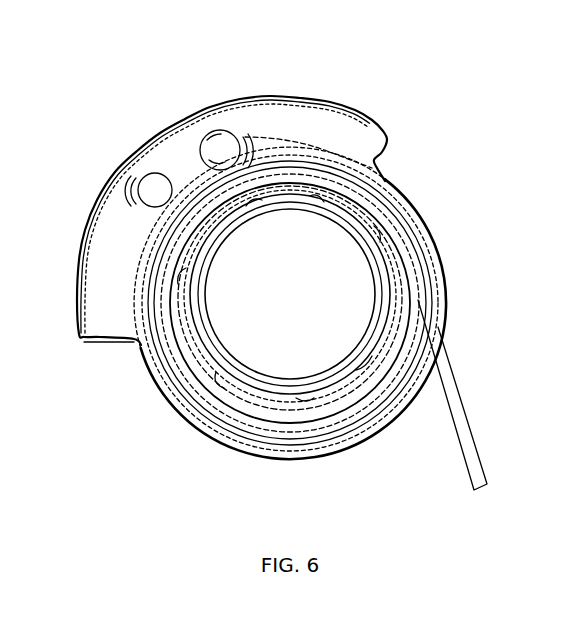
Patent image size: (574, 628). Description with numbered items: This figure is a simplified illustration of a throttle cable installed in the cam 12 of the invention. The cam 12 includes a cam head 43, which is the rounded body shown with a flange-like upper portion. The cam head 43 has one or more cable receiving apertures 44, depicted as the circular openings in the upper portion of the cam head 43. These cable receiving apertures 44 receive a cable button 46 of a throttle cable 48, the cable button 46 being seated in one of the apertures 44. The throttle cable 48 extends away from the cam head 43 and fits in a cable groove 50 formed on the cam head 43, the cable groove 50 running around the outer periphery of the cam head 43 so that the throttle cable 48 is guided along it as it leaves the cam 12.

The cam 12 is at (287, 259).
The cam head 43 is at (293, 120).
The cable receiving apertures 44 is at (145, 172).
The cable button 46 is at (221, 147).
The throttle cable 48 is at (458, 415).
The cable groove 50 is at (433, 223).